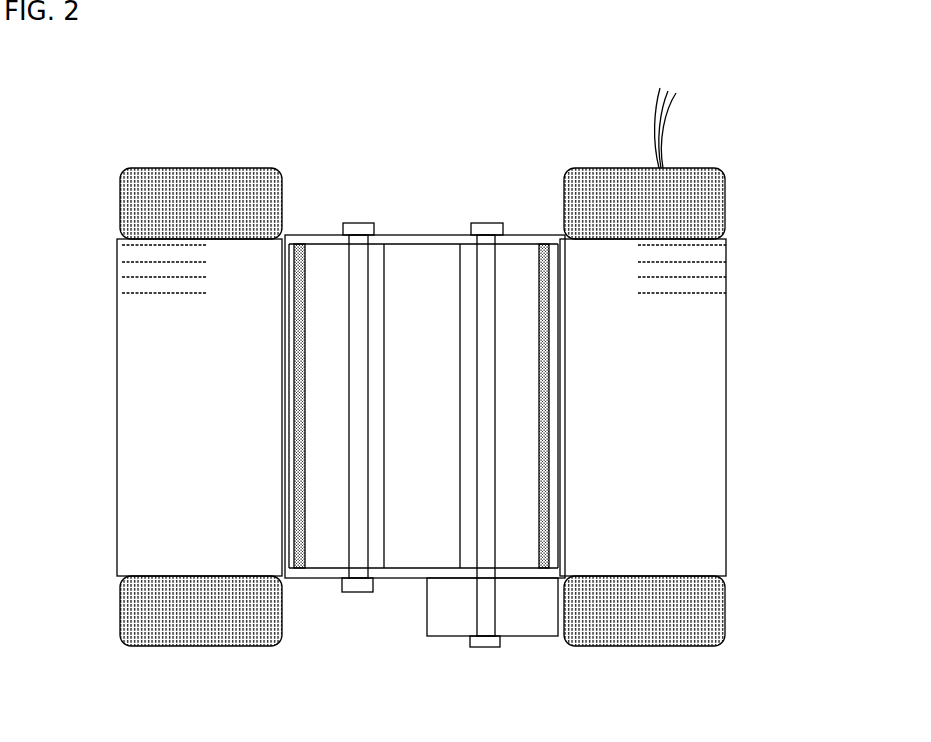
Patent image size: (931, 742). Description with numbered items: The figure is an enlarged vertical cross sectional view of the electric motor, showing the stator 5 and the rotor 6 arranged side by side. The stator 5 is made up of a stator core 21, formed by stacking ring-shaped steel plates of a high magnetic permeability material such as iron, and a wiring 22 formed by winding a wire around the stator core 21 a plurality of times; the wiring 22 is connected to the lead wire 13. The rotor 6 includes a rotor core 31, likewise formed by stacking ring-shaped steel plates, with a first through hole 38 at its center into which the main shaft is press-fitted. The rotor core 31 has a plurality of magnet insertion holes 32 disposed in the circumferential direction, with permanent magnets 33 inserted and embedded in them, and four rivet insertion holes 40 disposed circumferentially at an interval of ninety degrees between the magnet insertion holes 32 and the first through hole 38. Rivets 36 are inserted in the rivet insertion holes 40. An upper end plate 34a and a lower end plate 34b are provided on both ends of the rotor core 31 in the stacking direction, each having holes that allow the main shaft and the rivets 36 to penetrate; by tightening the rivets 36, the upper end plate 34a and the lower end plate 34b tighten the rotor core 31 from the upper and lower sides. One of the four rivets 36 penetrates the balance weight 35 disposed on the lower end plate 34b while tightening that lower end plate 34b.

The stator 5 is at (729, 460).
The rotor 6 is at (563, 357).
The lead wire 13 is at (667, 122).
The stator core 21 is at (713, 268).
The wiring 22 is at (708, 200).
The rotor core 31 is at (327, 559).
The magnet insertion holes 32 is at (300, 243).
The permanent magnets 33 is at (307, 262).
The upper end plate 34a is at (417, 235).
The lower end plate 34b is at (397, 577).
The balance weight 35 is at (453, 626).
The rivets 36 is at (362, 233).
The first through hole 38 is at (395, 532).
The rivet insertion holes 40 is at (494, 548).